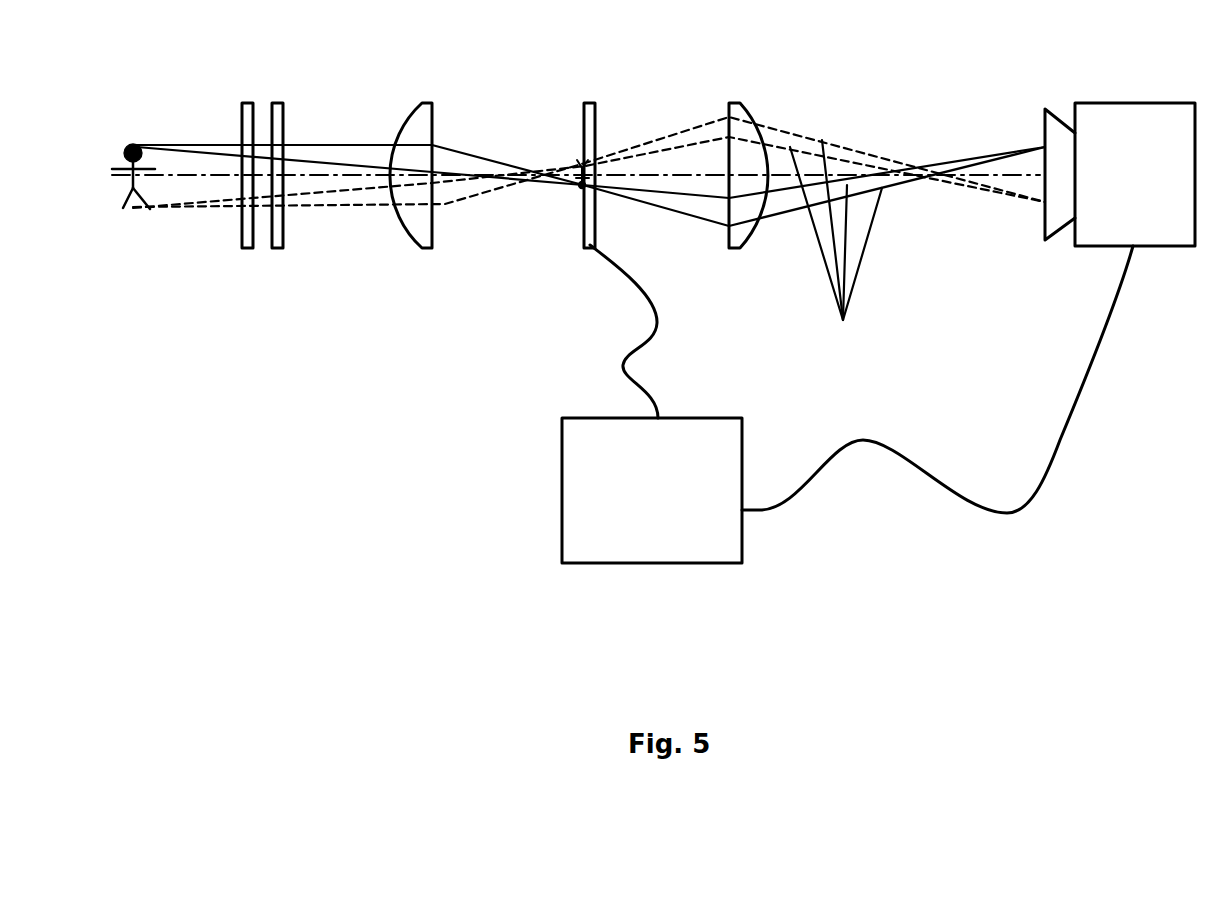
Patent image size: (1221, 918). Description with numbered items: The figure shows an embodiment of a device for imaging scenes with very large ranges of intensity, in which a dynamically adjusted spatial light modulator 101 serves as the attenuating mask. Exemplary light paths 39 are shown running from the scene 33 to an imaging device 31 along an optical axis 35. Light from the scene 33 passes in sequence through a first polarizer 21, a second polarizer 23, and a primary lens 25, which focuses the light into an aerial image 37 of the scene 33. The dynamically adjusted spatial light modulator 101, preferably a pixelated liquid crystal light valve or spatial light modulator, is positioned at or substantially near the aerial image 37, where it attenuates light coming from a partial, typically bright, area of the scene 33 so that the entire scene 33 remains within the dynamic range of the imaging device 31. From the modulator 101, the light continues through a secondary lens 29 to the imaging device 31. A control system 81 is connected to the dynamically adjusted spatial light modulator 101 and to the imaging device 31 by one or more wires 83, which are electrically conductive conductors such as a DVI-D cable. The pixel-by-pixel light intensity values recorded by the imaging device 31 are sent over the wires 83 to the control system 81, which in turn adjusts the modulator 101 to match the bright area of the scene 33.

The first polarizer 21 is at (247, 102).
The second polarizer 23 is at (277, 102).
The primary lens 25 is at (422, 102).
The dynamically adjusted spatial light modulator 101 is at (590, 102).
The secondary lens 29 is at (737, 102).
The imaging device 31 is at (1133, 102).
The scene 33 is at (127, 195).
The optical axis 35 is at (168, 175).
The aerial image 37 is at (573, 190).
The light paths 39 is at (836, 249).
The control system 81 is at (562, 490).
The wires 83 is at (622, 365).